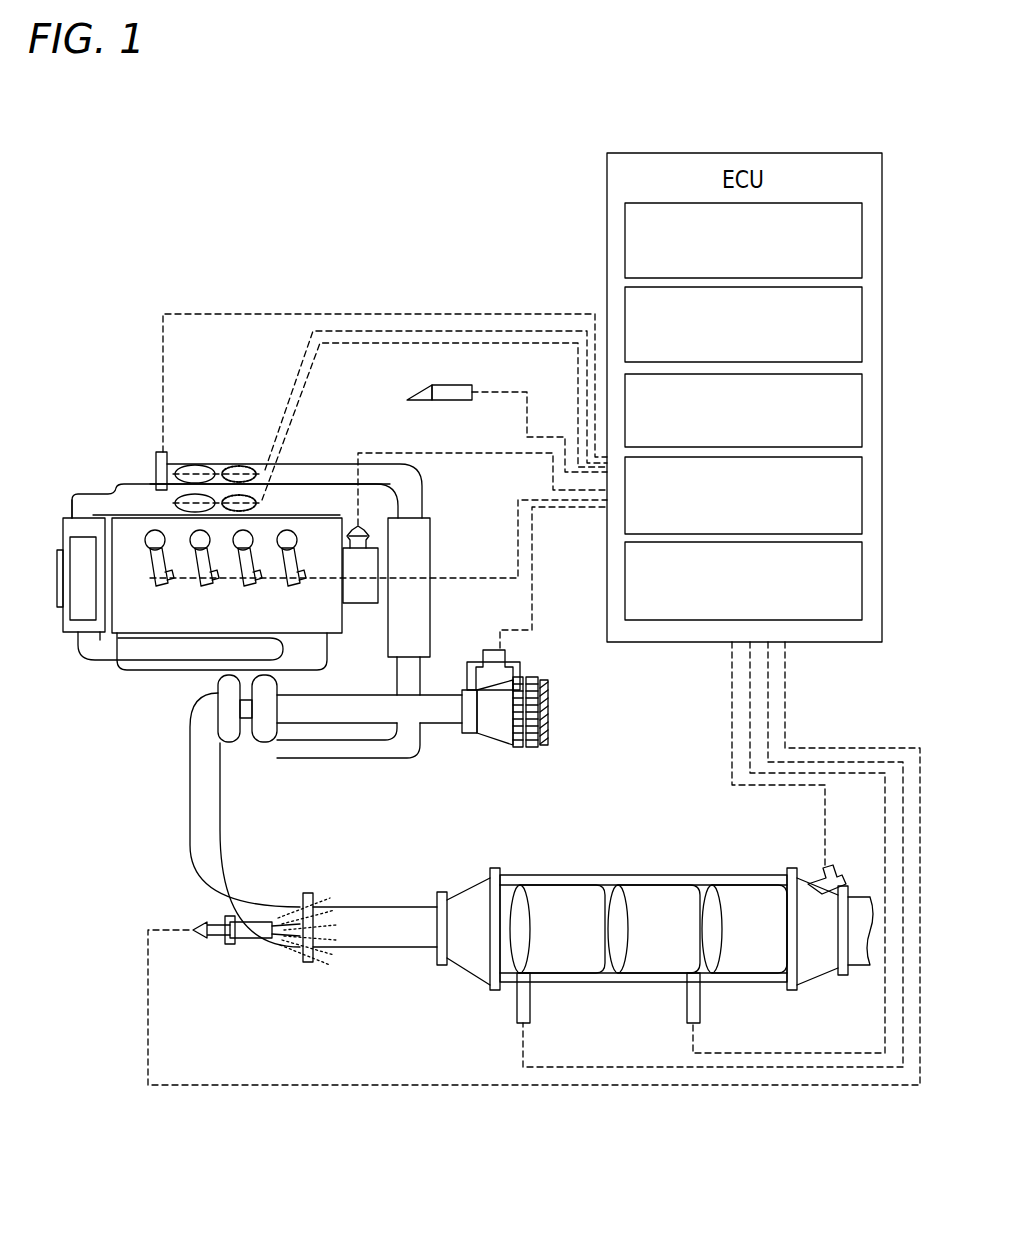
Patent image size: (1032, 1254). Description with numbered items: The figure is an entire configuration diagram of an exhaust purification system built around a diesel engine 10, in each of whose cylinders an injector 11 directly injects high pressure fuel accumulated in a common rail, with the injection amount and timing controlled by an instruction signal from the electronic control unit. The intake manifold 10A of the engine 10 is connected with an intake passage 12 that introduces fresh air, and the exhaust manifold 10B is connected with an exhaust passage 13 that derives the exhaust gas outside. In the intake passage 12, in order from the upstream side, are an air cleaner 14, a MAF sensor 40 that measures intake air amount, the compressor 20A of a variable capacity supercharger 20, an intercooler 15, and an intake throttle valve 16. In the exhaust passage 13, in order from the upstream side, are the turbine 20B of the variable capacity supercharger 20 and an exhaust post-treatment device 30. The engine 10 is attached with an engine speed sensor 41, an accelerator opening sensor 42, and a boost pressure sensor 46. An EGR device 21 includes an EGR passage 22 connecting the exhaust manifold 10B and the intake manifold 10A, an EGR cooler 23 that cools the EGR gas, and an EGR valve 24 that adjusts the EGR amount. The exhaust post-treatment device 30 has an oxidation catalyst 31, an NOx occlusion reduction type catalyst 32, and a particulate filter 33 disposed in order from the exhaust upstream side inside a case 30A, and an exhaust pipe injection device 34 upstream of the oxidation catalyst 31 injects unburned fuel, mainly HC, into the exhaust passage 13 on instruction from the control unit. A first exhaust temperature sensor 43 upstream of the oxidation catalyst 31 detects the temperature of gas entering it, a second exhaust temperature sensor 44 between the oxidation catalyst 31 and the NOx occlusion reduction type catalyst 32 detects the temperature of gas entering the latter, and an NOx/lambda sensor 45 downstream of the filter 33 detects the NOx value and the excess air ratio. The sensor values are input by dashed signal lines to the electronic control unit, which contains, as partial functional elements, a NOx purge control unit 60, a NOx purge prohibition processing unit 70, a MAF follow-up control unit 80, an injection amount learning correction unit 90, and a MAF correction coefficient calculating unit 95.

The diesel engine 10 is at (310, 517).
The intake manifold 10A is at (130, 484).
The exhaust manifold 10B is at (136, 672).
The injector 11 is at (317, 592).
The intake passage 12 is at (365, 760).
The exhaust passage 13 is at (190, 805).
The air cleaner 14 is at (530, 676).
The intercooler 15 is at (430, 550).
The intake throttle valve 16 is at (205, 466).
The variable capacity supercharger 20 is at (280, 761).
The compressor 20A is at (264, 742).
The turbine 20B is at (228, 742).
The EGR device 21 is at (76, 492).
The EGR passage 22 is at (88, 655).
The EGR cooler 23 is at (58, 570).
The EGR valve 24 is at (200, 496).
The exhaust post-treatment device 30 is at (681, 881).
The case 30A is at (522, 874).
The oxidation catalyst 31 is at (585, 946).
The NOx occlusion reduction type catalyst 32 is at (670, 946).
The particulate filter 33 is at (755, 946).
The exhaust pipe injection device 34 is at (248, 940).
The MAF sensor 40 is at (492, 648).
The engine speed sensor 41 is at (360, 526).
The accelerator opening sensor 42 is at (462, 375).
The first exhaust temperature sensor 43 is at (545, 1015).
The second exhaust temperature sensor 44 is at (715, 1015).
The NOx/lambda sensor 45 is at (818, 870).
The boost pressure sensor 46 is at (152, 455).
The NOx purge control unit 60 is at (862, 243).
The NOx purge prohibition processing unit 70 is at (862, 327).
The MAF follow-up control unit 80 is at (862, 412).
The injection amount learning correction unit 90 is at (862, 497).
The MAF correction coefficient calculating unit 95 is at (862, 580).